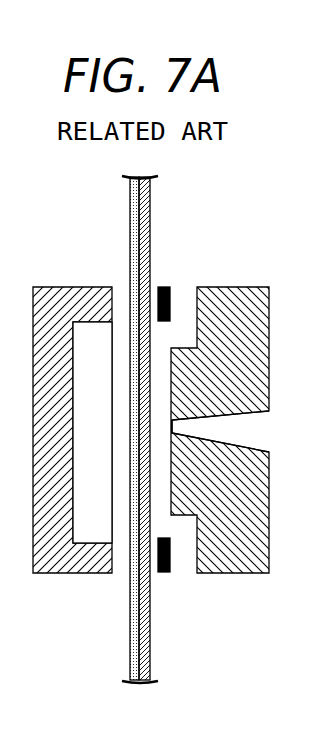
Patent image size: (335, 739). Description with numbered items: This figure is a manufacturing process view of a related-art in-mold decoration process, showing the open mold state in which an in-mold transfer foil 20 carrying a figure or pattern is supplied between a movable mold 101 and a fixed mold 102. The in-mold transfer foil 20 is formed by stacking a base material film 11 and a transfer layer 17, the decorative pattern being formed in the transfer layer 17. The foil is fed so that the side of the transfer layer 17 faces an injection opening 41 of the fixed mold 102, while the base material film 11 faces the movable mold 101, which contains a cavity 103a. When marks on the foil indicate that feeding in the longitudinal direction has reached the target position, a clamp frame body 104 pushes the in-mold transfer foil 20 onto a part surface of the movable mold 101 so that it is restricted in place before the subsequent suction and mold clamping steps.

The in-mold transfer foil 20 is at (147, 422).
The base material film 11 is at (132, 228).
The transfer layer 17 is at (148, 243).
The movable mold 101 is at (52, 562).
The fixed mold 102 is at (240, 563).
The cavity 103a is at (95, 343).
The clamp frame body 104 is at (165, 283).
The injection opening 41 is at (260, 428).